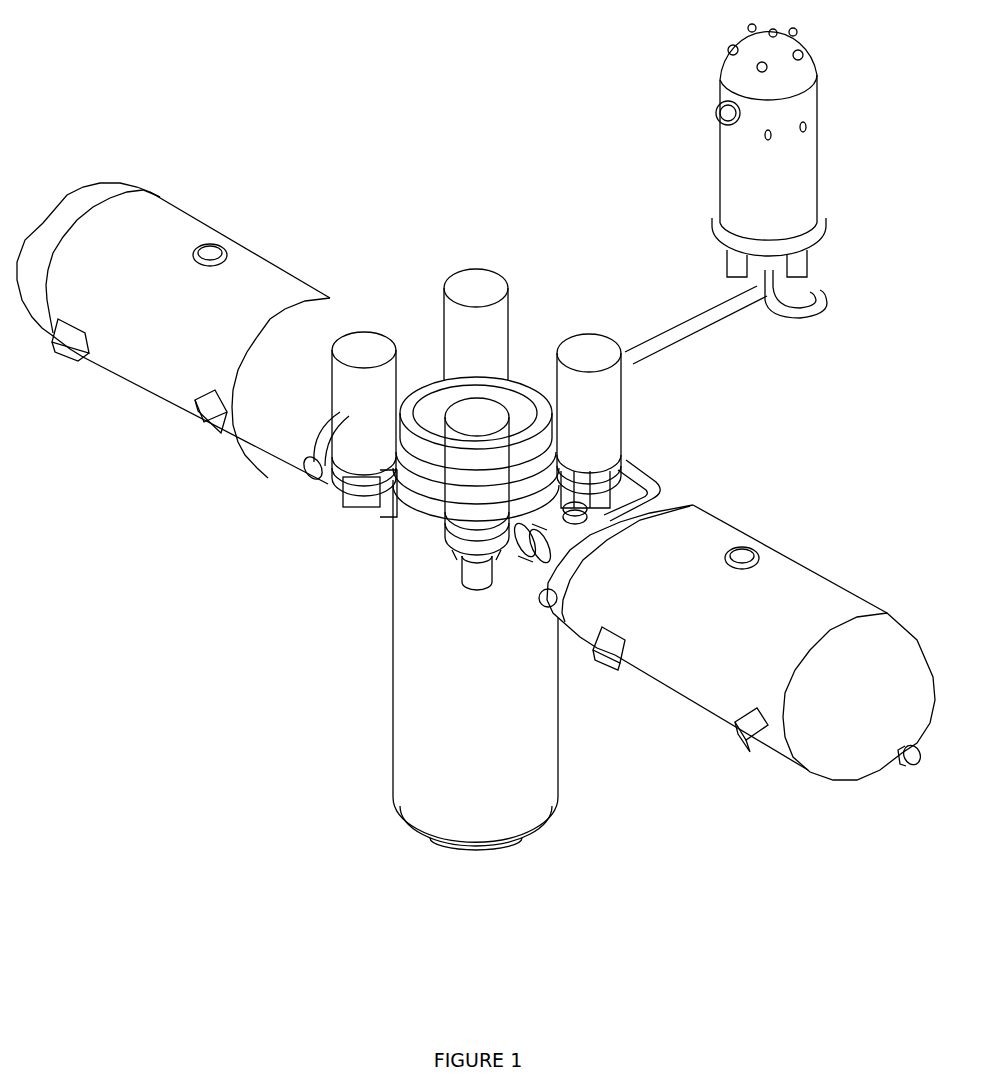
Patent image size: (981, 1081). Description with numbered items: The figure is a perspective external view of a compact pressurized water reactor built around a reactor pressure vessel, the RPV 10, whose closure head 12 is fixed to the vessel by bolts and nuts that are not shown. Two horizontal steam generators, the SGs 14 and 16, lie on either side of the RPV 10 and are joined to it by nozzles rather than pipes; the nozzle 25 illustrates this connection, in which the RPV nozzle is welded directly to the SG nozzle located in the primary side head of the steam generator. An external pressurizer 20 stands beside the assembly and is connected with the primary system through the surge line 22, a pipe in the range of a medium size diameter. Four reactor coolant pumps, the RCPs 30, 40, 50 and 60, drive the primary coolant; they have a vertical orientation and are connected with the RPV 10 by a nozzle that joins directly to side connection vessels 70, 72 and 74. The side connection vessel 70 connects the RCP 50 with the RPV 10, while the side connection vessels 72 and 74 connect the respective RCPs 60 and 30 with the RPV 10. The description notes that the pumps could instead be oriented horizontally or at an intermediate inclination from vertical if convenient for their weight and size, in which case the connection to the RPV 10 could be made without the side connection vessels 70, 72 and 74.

The RPV 10 is at (447, 675).
The closure head 12 is at (435, 412).
The horizontal SG 14 is at (218, 370).
The horizontal SG 16 is at (727, 663).
The external pressurizer 20 is at (757, 187).
The surge line 22 is at (662, 343).
The nozzle 25 is at (520, 550).
The RCP 30 is at (592, 410).
The RCP 40 is at (478, 345).
The RCP 50 is at (362, 432).
The RCP 60 is at (457, 495).
The side connection vessel 70 is at (363, 497).
The side connection vessel 72 is at (475, 565).
The side connection vessel 74 is at (590, 497).